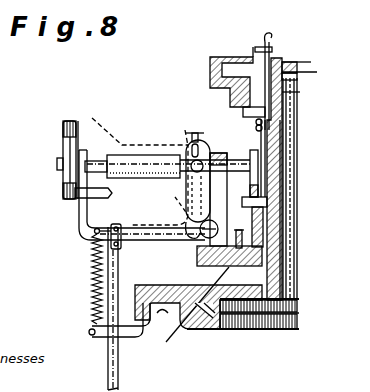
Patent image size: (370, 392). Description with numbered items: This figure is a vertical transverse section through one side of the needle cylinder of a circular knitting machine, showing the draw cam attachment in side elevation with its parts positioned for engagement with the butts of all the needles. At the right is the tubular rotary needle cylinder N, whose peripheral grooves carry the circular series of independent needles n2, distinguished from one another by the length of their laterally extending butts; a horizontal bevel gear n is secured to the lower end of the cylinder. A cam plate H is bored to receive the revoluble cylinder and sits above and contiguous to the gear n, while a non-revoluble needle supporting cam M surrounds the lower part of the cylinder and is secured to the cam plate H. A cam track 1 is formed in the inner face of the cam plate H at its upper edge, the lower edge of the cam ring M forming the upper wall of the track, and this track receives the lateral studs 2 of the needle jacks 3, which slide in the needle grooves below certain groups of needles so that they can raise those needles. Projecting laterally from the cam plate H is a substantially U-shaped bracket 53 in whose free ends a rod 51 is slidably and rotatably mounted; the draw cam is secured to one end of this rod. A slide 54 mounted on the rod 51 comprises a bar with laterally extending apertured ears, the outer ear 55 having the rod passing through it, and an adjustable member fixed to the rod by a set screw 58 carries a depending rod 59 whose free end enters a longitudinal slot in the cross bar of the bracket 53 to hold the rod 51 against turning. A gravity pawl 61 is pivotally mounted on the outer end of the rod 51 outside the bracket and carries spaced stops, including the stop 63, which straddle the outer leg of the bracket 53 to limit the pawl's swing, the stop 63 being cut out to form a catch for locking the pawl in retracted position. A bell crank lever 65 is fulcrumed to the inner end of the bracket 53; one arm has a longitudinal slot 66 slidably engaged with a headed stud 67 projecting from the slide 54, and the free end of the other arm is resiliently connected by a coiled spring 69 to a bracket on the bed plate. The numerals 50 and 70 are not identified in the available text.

The needle cylinder N is at (287, 112).
The needles n2 is at (282, 152).
The presser bar bracket 50 is at (252, 150).
The rod 51 is at (243, 163).
The needle jacks 3 is at (278, 202).
The needle supporting cam M is at (260, 225).
The lateral studs 2 is at (282, 252).
The cam plate H is at (282, 274).
The bevel gear n is at (213, 330).
The cam track 1 is at (177, 318).
The depending rod 59 is at (192, 246).
The longitudinal slot 66 is at (190, 150).
The headed stud 67 is at (190, 170).
The slide 54 is at (167, 145).
The set screw 58 is at (190, 133).
The apertured ear 55 is at (133, 163).
The gravity pawl 61 is at (68, 143).
The stop 63 is at (97, 199).
The U-shaped bracket 53 is at (80, 220).
The bell crank lever 65 is at (116, 250).
The coiled spring 69 is at (95, 287).
The rod 70 is at (116, 353).